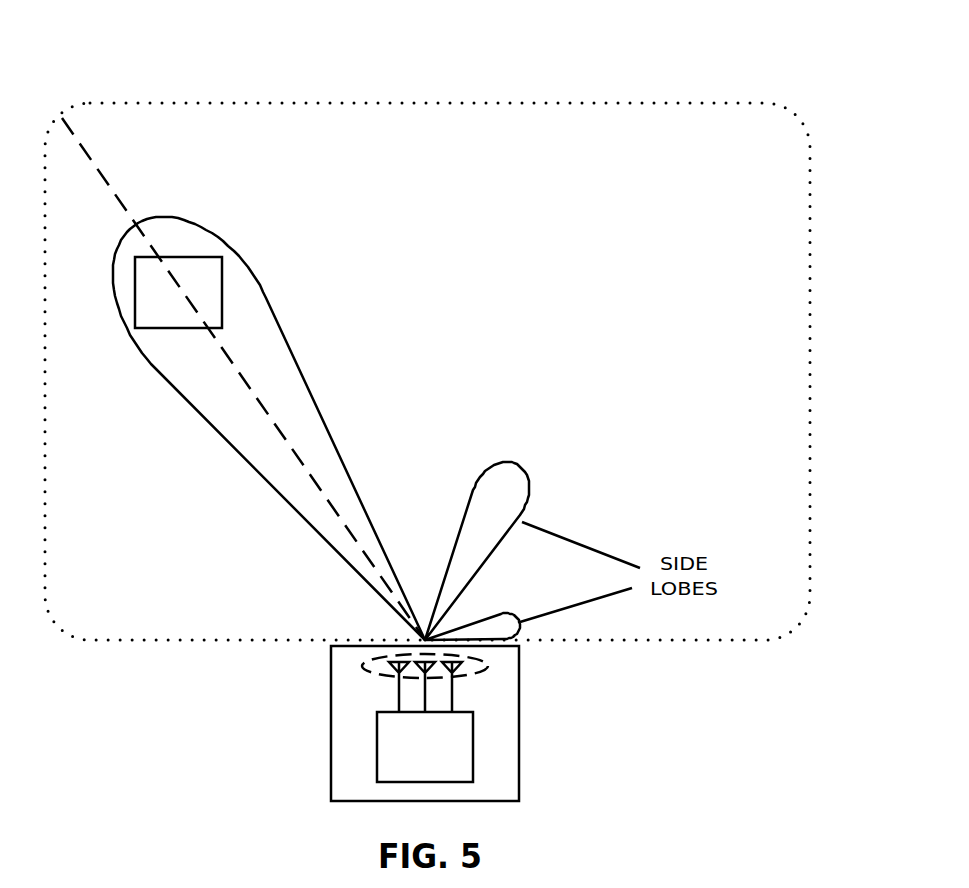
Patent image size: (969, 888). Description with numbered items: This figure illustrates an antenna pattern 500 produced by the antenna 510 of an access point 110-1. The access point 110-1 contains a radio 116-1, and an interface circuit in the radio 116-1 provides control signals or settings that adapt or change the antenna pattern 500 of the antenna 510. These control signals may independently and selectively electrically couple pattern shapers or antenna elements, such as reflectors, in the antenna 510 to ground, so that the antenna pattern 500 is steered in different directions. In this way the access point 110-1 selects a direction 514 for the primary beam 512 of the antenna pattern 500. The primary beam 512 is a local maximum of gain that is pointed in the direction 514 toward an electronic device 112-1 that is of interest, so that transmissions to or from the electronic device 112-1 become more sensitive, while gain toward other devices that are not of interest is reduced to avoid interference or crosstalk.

The antenna pattern 500 is at (733, 100).
The primary beam 512 is at (183, 220).
The direction 514 is at (273, 428).
The electronic device 112-1 is at (204, 314).
The antenna 510 is at (473, 670).
The radio 116-1 is at (452, 767).
The access point 110-1 is at (506, 728).